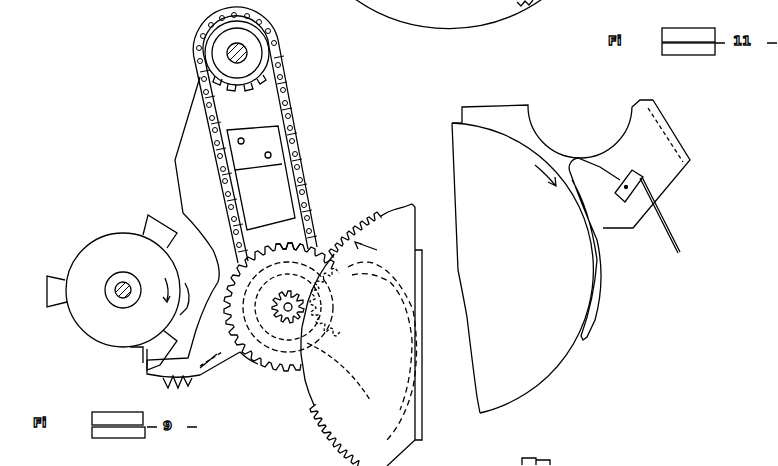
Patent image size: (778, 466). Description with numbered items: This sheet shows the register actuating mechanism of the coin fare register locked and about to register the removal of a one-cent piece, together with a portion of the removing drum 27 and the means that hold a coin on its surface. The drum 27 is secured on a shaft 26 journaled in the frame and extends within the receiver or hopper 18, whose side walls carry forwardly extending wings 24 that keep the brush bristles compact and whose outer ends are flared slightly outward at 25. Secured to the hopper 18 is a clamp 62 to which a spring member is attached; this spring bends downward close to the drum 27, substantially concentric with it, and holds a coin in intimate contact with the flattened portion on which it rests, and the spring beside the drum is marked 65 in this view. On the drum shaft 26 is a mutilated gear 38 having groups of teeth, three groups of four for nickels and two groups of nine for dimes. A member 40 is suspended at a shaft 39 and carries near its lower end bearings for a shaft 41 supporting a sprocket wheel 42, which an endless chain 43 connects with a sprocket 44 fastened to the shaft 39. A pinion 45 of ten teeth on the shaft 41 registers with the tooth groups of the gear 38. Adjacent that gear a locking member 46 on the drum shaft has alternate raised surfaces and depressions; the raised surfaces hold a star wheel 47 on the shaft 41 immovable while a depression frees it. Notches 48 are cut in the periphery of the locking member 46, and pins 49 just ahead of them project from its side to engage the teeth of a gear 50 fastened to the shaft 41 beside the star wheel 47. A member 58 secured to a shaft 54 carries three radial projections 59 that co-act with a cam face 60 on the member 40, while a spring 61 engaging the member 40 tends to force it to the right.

In FIG. 9, the shaft 39 is at (237, 44).
In FIG. 9, the sprocket 44 is at (245, 72).
In FIG. 9, the endless chain 43 is at (292, 143).
In FIG. 9, the member 40 is at (185, 227).
In FIG. 9, the sprocket wheel 42 is at (280, 268).
In FIG. 9, the gear 50 is at (229, 331).
In FIG. 9, the pinion 45 is at (279, 307).
In FIG. 9, the shaft 41 is at (286, 310).
In FIG. 9, the star wheel 47 is at (256, 371).
In FIG. 9, the spring 61 is at (192, 373).
In FIG. 9, the mutilated gear 38 is at (358, 335).
In FIG. 9, the locking member 46 is at (423, 254).
In FIG. 9, the notches 48 is at (352, 300).
In FIG. 9, the pins 49 is at (382, 351).
In FIG. 9, the member 58 is at (123, 290).
In FIG. 9, the shaft 54 is at (123, 281).
In FIG. 9, the radial projections 59 is at (55, 274).
In FIG. 9, the cam face 60 is at (191, 299).
In FIG. 11, the receiver or hopper 18 is at (552, 129).
In FIG. 11, the flared outer ends 25 is at (650, 164).
In FIG. 11, the wings 24 is at (657, 140).
In FIG. 11, the drum 27 is at (522, 268).
In FIG. 11, the spring 65 is at (603, 268).
In FIG. 11, the clamp 62 is at (640, 210).
In FIG. 11, the shaft 26 is at (536, 452).